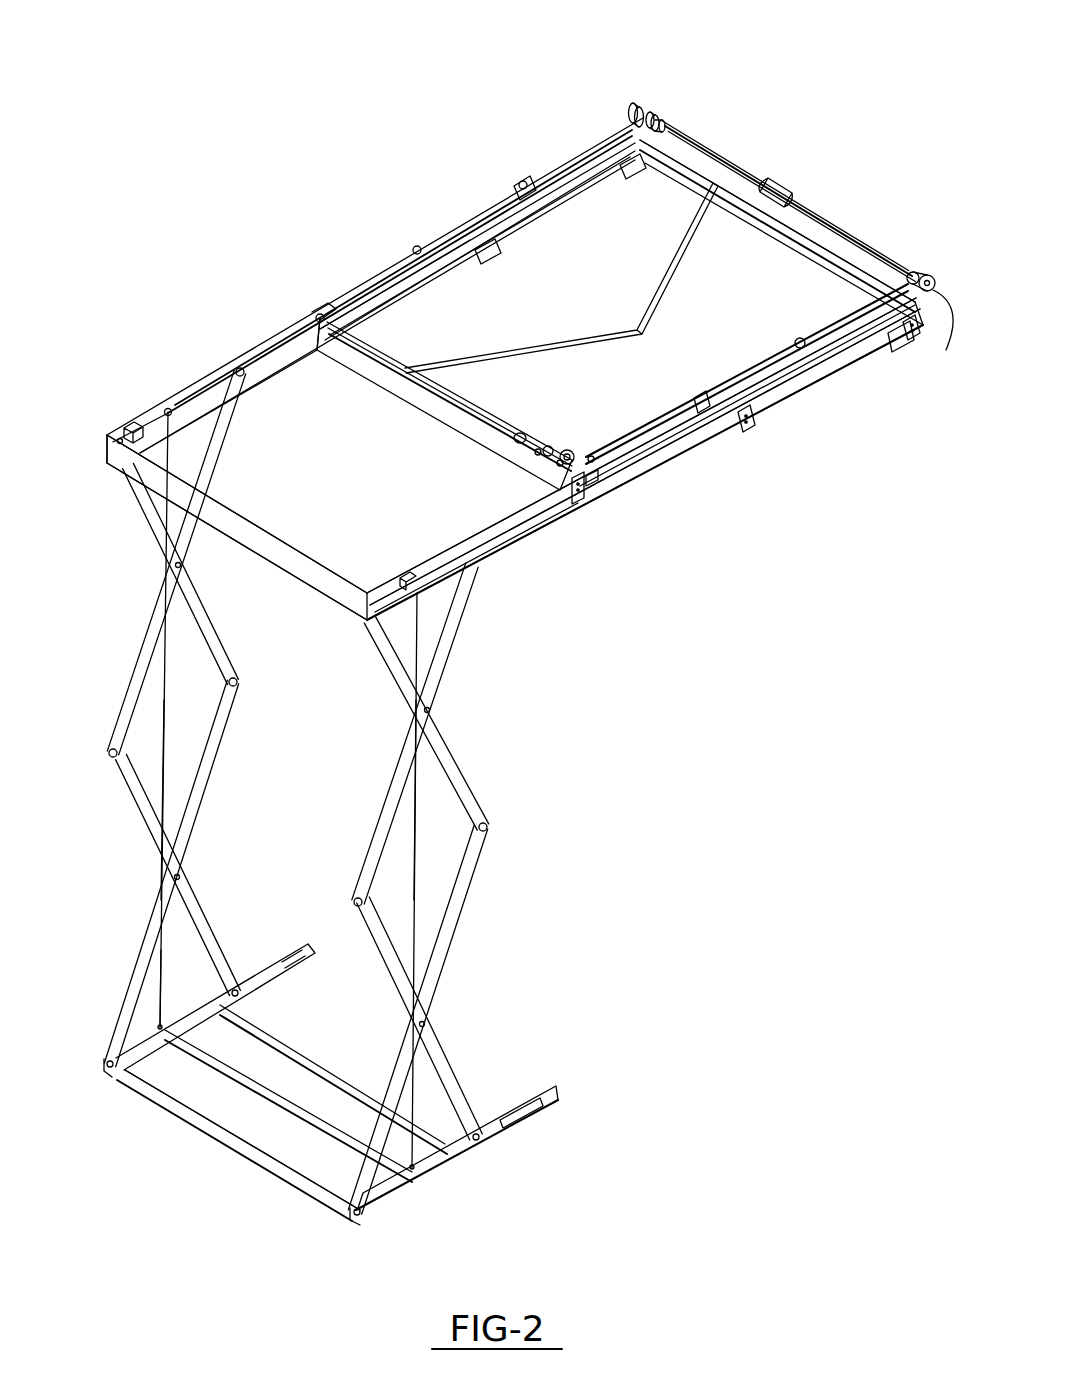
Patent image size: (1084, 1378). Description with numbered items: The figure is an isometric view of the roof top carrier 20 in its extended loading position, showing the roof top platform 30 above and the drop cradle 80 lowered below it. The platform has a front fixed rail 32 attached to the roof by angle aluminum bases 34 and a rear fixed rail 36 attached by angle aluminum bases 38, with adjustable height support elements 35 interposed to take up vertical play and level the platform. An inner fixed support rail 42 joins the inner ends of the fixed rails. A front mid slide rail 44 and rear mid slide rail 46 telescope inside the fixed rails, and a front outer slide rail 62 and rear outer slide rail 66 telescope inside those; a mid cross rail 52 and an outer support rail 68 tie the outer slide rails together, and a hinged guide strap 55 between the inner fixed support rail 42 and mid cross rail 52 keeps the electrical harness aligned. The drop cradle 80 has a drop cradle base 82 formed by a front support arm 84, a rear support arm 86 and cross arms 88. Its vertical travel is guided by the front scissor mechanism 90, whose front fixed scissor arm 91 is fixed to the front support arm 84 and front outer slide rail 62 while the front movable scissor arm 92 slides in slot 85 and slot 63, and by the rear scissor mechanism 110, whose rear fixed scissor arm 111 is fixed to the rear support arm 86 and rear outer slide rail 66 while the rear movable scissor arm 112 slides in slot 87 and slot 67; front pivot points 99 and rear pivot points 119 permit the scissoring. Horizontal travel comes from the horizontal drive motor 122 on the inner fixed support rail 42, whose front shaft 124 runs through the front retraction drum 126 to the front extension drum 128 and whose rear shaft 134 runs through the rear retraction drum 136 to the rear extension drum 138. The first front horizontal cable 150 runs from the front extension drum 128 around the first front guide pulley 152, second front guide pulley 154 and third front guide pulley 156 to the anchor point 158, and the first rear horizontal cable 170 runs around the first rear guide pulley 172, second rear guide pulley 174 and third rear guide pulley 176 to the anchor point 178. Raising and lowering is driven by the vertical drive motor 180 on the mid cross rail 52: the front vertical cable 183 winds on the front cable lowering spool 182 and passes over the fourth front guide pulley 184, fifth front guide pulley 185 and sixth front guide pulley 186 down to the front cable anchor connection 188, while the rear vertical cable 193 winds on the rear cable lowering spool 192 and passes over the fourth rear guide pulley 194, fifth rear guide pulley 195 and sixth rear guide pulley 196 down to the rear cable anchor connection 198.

The roof top carrier 20 is at (407, 30).
The roof top platform 30 is at (925, 75).
The front fixed rail 32 is at (808, 383).
The angle aluminum bases 34 is at (905, 342).
The adjustable height support elements 35 is at (754, 404).
The rear fixed rail 36 is at (570, 182).
The angle aluminum bases 38 is at (633, 178).
The inner fixed support rail 42 is at (747, 204).
The front mid slide rail 44 is at (666, 463).
The rear mid slide rail 46 is at (392, 288).
The mid cross rail 52 is at (410, 398).
The hinged guide strap 55 is at (590, 332).
The front outer slide rail 62 is at (385, 645).
The slot 63 is at (507, 523).
The rear outer slide rail 66 is at (128, 428).
The slot 67 is at (270, 365).
The outer support rail 68 is at (290, 566).
The drop cradle 80 is at (128, 889).
The drop cradle base 82 is at (212, 1165).
The front support arm 84 is at (361, 1216).
The slot 85 is at (558, 1103).
The rear support arm 86 is at (132, 1052).
The slot 87 is at (268, 973).
The cross arms 88 is at (300, 1055).
The front scissor mechanism 90 is at (578, 718).
The front fixed scissor arm 91 is at (463, 906).
The front movable scissor arm 92 is at (393, 967).
The front pivot points 99 is at (431, 710).
The rear scissor mechanism 110 is at (126, 639).
The rear fixed scissor arm 111 is at (214, 752).
The rear movable scissor arm 112 is at (122, 787).
The rear pivot points 119 is at (175, 565).
The horizontal drive motor 122 is at (779, 176).
The front shaft 124 is at (851, 236).
The front retraction drum 126 is at (925, 274).
The front extension drum 128 is at (934, 336).
The rear shaft 134 is at (703, 150).
The rear retraction drum 136 is at (656, 113).
The rear extension drum 138 is at (636, 103).
The first front horizontal cable 150 is at (834, 352).
The first front guide pulley 152 is at (700, 398).
The second front guide pulley 154 is at (798, 338).
The third front guide pulley 156 is at (595, 482).
The anchor point 158 is at (594, 456).
The first rear horizontal cable 170 is at (577, 157).
The first rear guide pulley 172 is at (415, 246).
The second rear guide pulley 174 is at (521, 182).
The third rear guide pulley 176 is at (316, 314).
The anchor point 178 is at (321, 312).
The vertical drive motor 180 is at (519, 434).
The front cable lowering spool 182 is at (568, 451).
The front vertical cable 183 is at (413, 878).
The fourth front guide pulley 184 is at (558, 463).
The fifth front guide pulley 185 is at (576, 502).
The sixth front guide pulley 186 is at (420, 560).
The front cable anchor connection 188 is at (404, 1156).
The rear cable lowering spool 192 is at (548, 446).
The rear vertical cable 193 is at (165, 752).
The fourth rear guide pulley 194 is at (535, 452).
The fifth rear guide pulley 195 is at (322, 322).
The sixth rear guide pulley 196 is at (168, 408).
The rear cable anchor connection 198 is at (158, 1025).